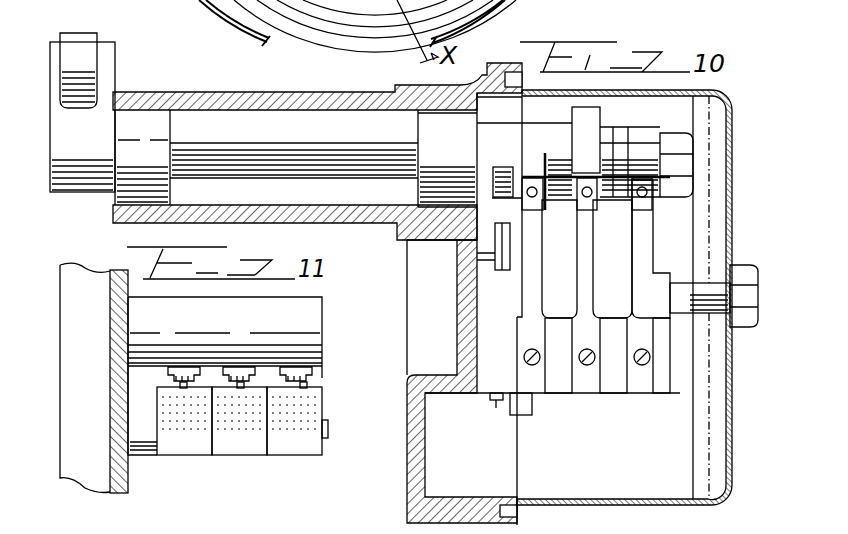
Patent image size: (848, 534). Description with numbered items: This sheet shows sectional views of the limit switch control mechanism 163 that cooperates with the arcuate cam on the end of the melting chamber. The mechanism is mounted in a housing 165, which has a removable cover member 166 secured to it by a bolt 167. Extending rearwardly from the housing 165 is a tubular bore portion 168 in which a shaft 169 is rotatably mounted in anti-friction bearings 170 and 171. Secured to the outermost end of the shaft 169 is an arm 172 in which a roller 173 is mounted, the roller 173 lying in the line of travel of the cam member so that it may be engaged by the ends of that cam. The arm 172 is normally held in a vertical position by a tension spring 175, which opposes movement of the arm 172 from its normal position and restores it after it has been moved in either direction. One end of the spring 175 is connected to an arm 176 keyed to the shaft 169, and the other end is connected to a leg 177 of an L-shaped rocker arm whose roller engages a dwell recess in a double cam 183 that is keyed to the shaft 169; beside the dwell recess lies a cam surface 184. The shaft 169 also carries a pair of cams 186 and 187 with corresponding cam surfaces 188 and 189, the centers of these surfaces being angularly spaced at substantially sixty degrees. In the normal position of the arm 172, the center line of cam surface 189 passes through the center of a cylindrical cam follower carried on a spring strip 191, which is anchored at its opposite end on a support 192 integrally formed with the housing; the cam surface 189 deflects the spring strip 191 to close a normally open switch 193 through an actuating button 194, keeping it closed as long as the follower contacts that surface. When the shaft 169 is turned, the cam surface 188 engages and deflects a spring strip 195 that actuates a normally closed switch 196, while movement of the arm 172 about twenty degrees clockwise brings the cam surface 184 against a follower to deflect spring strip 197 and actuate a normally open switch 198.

In FIG. 10, the limit switch control mechanism 163 is at (393, 354).
In FIG. 10, the housing 165 is at (462, 332).
In FIG. 11, the housing 165 is at (130, 402).
In FIG. 10, the removable cover member 166 is at (728, 200).
In FIG. 10, the bolt 167 is at (742, 278).
In FIG. 10, the tubular bore portion 168 is at (303, 218).
In FIG. 10, the shaft 169 is at (262, 148).
In FIG. 10, the anti-friction bearing 170 is at (433, 123).
In FIG. 10, the anti-friction bearing 171 is at (150, 125).
In FIG. 10, the arm 172 is at (107, 78).
In FIG. 10, the roller 173 is at (87, 47).
In FIG. 10, the tension spring 175 is at (507, 272).
In FIG. 10, the arm 176 is at (480, 237).
In FIG. 10, the leg 177 is at (532, 405).
In FIG. 10, the double cam 183 is at (540, 203).
In FIG. 10, the cam surface 184 is at (512, 198).
In FIG. 10, the cam 186 is at (603, 113).
In FIG. 10, the cam 187 is at (650, 200).
In FIG. 10, the cam surface 188 is at (570, 112).
In FIG. 10, the cam surface 189 is at (620, 203).
In FIG. 10, the spring strip 191 is at (645, 249).
In FIG. 11, the spring strip 191 is at (300, 376).
In FIG. 10, the support 192 is at (667, 370).
In FIG. 11, the switch 193 is at (310, 452).
In FIG. 11, the actuating button 194 is at (298, 390).
In FIG. 10, the spring strip 195 is at (588, 285).
In FIG. 11, the spring strip 195 is at (235, 378).
In FIG. 11, the switch 196 is at (257, 437).
In FIG. 10, the spring strip 197 is at (532, 249).
In FIG. 11, the spring strip 197 is at (175, 378).
In FIG. 11, the switch 198 is at (193, 437).